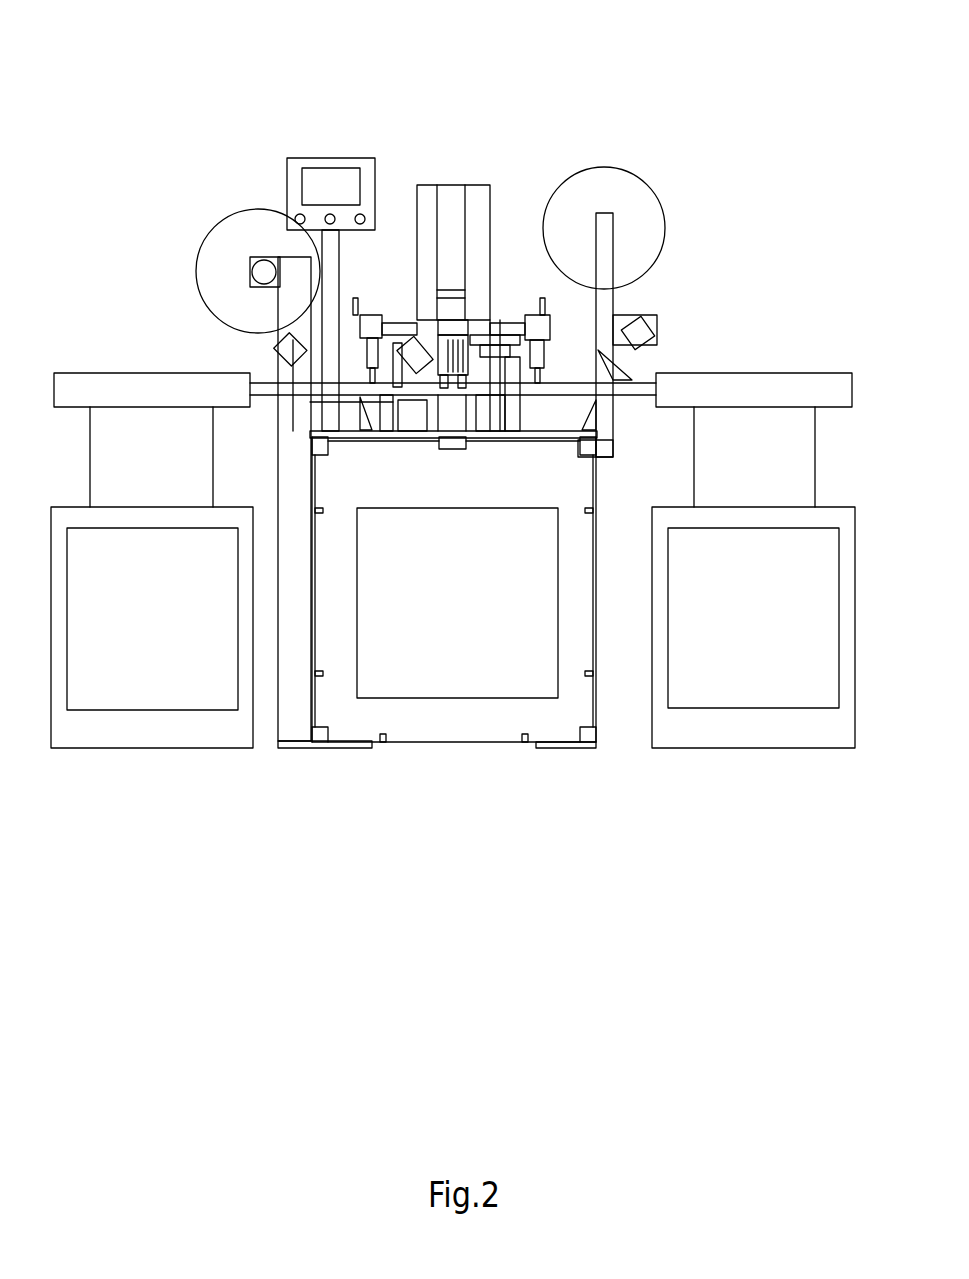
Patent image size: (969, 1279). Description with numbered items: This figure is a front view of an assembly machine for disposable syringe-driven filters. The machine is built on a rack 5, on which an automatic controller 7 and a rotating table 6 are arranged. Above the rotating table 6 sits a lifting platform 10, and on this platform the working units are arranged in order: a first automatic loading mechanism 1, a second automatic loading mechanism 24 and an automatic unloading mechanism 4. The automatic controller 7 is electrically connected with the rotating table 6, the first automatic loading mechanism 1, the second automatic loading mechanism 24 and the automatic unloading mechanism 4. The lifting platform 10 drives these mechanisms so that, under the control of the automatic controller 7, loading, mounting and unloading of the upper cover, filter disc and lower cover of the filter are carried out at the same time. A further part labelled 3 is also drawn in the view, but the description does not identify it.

The first automatic loading mechanism 1 is at (250, 275).
The support bracket 3 is at (577, 582).
The automatic unloading mechanism 4 is at (558, 235).
The rack 5 is at (399, 639).
The rotating table 6 is at (268, 349).
The automatic controller 7 is at (267, 225).
The lifting platform 10 is at (480, 258).
The second automatic loading mechanism 24 is at (642, 262).